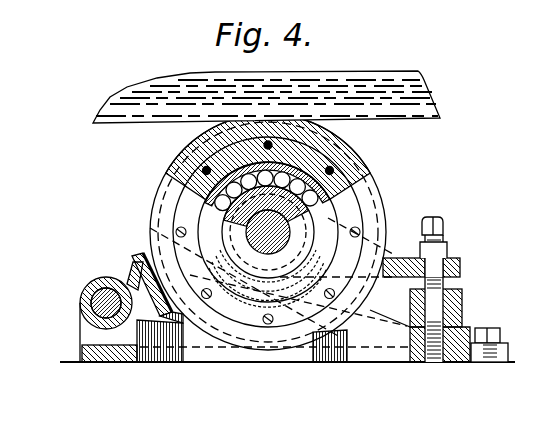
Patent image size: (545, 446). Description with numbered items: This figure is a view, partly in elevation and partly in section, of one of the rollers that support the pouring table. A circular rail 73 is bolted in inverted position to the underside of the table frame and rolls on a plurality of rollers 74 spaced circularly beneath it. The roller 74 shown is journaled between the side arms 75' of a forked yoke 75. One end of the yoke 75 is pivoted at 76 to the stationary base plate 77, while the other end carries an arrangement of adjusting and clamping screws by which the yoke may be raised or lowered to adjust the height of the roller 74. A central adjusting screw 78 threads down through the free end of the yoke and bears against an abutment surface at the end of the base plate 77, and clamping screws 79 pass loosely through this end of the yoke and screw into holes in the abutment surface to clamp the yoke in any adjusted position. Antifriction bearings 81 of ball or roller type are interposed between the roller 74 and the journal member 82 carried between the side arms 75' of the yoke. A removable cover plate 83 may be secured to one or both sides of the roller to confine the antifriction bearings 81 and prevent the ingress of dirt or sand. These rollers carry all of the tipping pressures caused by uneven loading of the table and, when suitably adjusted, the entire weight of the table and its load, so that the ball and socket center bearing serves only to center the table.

The circular rail 73 is at (437, 116).
The roller 74 is at (186, 162).
The forked yoke 75 is at (129, 282).
The side arms 75' is at (145, 272).
The pivot 76 is at (90, 294).
The stationary base plate 77 is at (82, 349).
The central adjusting screw 78 is at (450, 252).
The clamping screw 79 is at (426, 346).
The antifriction bearings 81 is at (332, 156).
The journal member 82 is at (262, 222).
The removable cover plate 83 is at (240, 316).